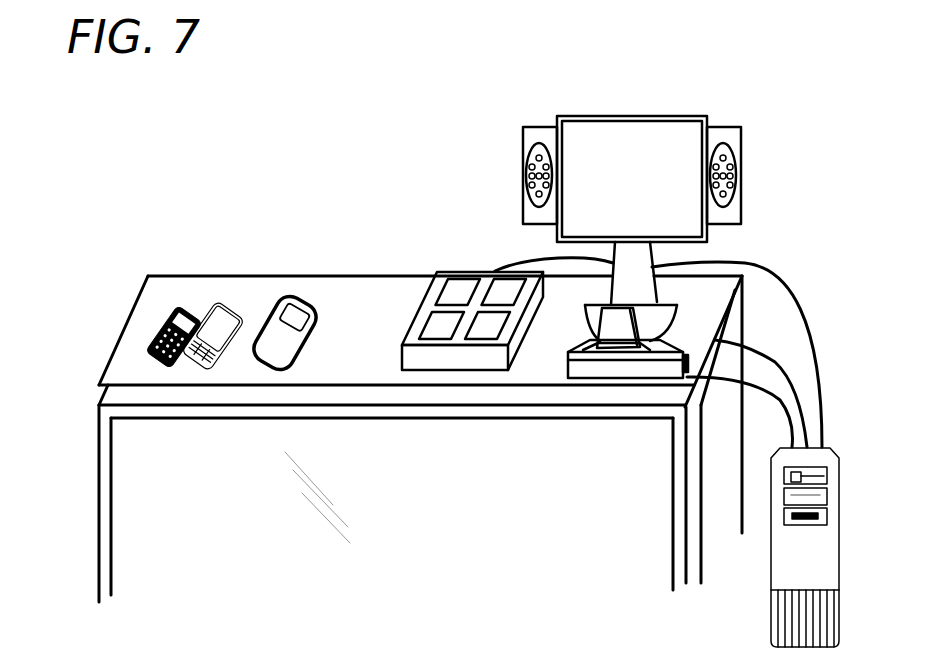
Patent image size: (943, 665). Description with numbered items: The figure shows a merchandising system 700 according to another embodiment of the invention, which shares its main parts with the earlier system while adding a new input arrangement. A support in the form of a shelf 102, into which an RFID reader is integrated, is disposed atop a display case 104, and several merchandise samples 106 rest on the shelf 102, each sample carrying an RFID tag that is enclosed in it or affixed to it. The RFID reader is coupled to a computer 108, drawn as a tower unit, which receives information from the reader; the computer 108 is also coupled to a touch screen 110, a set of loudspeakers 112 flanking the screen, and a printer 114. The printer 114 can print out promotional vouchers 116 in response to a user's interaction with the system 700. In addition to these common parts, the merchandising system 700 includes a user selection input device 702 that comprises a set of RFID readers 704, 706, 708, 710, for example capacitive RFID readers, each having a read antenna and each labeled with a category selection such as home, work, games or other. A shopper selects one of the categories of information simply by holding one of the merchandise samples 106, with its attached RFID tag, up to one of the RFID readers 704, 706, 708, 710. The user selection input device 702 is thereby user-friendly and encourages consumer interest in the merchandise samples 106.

The merchandising system 700 is at (397, 158).
The shelf 102 is at (723, 318).
The display case 104 is at (87, 443).
The merchandise samples 106 is at (207, 305).
The computer 108 is at (770, 595).
The touch screen 110 is at (678, 117).
The loudspeakers 112 is at (515, 126).
The printer 114 is at (587, 367).
The promotional vouchers 116 is at (590, 343).
The user selection input device 702 is at (414, 292).
The RFID reader 704 is at (440, 272).
The RFID reader 706 is at (498, 272).
The RFID reader 708 is at (412, 322).
The RFID reader 710 is at (495, 331).